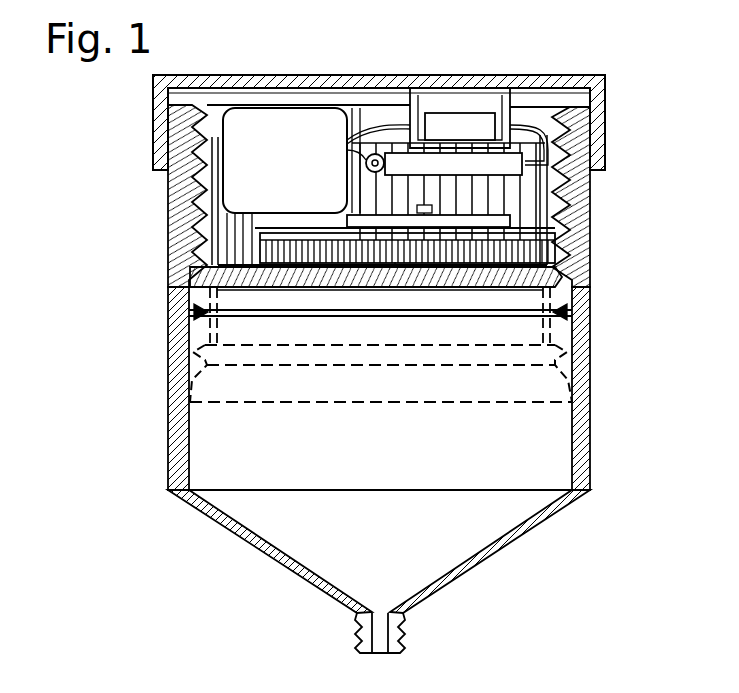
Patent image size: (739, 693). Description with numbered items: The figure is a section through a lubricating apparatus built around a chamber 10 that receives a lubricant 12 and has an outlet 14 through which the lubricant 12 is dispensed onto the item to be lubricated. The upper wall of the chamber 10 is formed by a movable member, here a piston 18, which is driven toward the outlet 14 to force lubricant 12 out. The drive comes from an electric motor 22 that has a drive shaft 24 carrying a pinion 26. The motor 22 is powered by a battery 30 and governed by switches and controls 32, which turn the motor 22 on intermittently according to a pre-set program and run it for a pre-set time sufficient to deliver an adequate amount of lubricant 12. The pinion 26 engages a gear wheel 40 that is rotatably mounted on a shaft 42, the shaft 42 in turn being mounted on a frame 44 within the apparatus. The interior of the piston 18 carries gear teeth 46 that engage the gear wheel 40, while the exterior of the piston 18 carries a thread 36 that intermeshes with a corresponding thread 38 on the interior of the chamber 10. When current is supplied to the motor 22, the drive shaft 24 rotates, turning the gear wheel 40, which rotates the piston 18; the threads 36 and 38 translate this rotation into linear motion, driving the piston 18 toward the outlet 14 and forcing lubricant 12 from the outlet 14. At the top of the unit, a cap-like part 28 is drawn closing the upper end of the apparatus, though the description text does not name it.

The chamber 10 is at (553, 433).
The lubricant 12 is at (297, 537).
The outlet 14 is at (360, 635).
The piston 18 is at (237, 297).
The motor 22 is at (277, 118).
The drive shaft 24 is at (275, 240).
The pinion 26 is at (170, 270).
The cap 28 is at (565, 75).
The battery 30 is at (465, 160).
The switches and controls 32 is at (443, 118).
The thread 36 is at (592, 188).
The thread 38 is at (535, 217).
The gear wheel 40 is at (438, 262).
The shaft 42 is at (398, 262).
The frame 44 is at (330, 125).
The gear teeth 46 is at (550, 240).